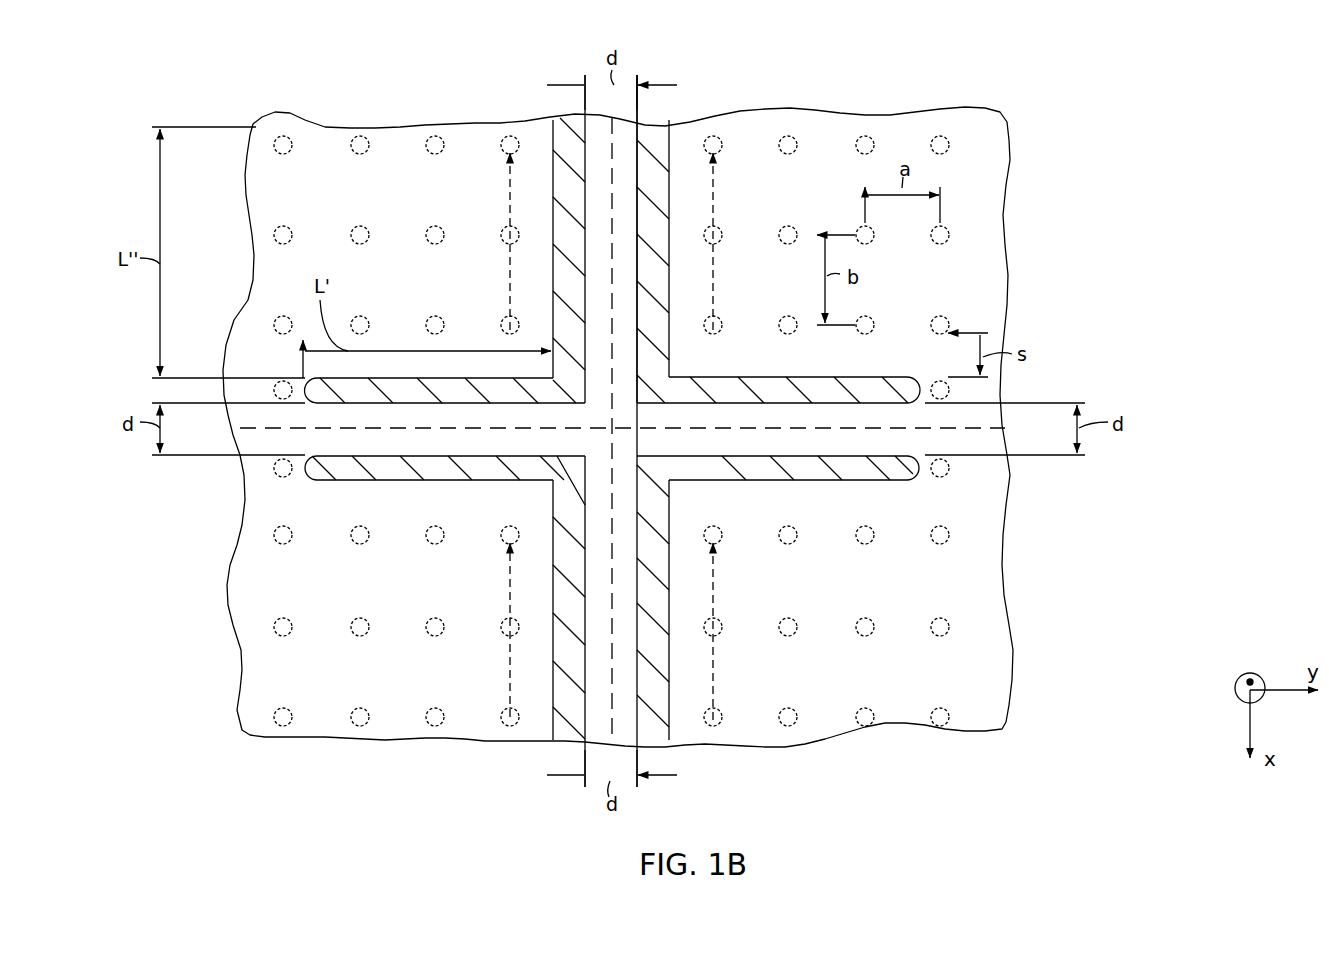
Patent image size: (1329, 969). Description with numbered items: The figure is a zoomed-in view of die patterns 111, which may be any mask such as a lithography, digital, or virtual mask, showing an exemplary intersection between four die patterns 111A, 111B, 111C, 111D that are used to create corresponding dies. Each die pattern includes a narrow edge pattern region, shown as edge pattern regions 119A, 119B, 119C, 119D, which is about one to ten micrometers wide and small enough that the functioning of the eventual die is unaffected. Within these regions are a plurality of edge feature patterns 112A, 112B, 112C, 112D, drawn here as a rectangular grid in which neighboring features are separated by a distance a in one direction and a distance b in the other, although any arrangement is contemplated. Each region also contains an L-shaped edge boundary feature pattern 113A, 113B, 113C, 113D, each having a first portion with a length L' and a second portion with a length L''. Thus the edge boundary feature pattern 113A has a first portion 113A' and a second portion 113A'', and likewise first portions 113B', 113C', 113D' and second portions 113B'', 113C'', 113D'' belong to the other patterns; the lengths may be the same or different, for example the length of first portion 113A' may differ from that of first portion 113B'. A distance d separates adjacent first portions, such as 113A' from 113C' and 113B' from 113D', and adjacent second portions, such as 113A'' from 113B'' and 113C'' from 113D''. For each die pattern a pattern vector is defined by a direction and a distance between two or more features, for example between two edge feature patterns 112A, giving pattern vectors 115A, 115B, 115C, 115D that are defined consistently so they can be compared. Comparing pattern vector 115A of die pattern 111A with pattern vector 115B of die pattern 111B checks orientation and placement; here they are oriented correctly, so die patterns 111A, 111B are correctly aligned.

The die patterns 111 is at (1082, 120).
The die pattern 111A is at (346, 243).
The die pattern 111B is at (912, 267).
The die pattern 111C is at (316, 627).
The die pattern 111D is at (906, 614).
The edge feature patterns 112A is at (363, 137).
The edge feature patterns 112B is at (948, 318).
The edge feature patterns 112C is at (435, 720).
The edge feature patterns 112D is at (943, 725).
The edge boundary feature pattern 113A is at (445, 239).
The first portion 113A' is at (445, 377).
The second portion 113A'' is at (514, 239).
The edge boundary feature pattern 113B is at (778, 239).
The first portion 113B' is at (778, 374).
The second portion 113B'' is at (694, 239).
The edge boundary feature pattern 113C is at (441, 630).
The first portion 113C' is at (445, 522).
The second portion 113C'' is at (532, 630).
The edge boundary feature pattern 113D is at (778, 431).
The first portion 113D' is at (778, 484).
The second portion 113D'' is at (700, 431).
The pattern vector 115A is at (509, 198).
The pattern vector 115B is at (713, 205).
The pattern vector 115C is at (509, 668).
The pattern vector 115D is at (713, 603).
The edge pattern region 119A is at (396, 243).
The edge pattern region 119B is at (899, 267).
The edge pattern region 119C is at (396, 627).
The edge pattern region 119D is at (873, 614).